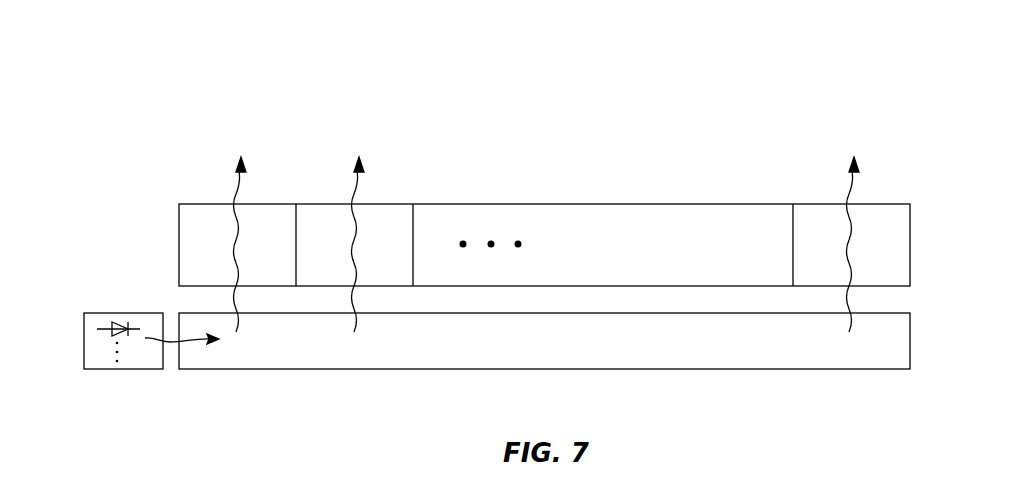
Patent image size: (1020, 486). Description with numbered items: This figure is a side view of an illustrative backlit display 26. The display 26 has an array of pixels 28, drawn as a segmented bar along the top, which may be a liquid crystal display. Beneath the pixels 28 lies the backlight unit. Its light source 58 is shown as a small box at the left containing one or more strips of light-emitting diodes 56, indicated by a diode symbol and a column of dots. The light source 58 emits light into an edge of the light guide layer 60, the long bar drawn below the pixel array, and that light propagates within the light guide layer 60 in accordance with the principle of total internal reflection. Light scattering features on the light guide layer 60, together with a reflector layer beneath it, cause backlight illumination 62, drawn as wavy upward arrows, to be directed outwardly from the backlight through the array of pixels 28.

The display 26 is at (742, 124).
The pixels 28 is at (201, 212).
The light-emitting diodes 56 is at (121, 313).
The light source 58 is at (137, 358).
The light guide layer 60 is at (312, 358).
The backlight illumination 62 is at (240, 184).